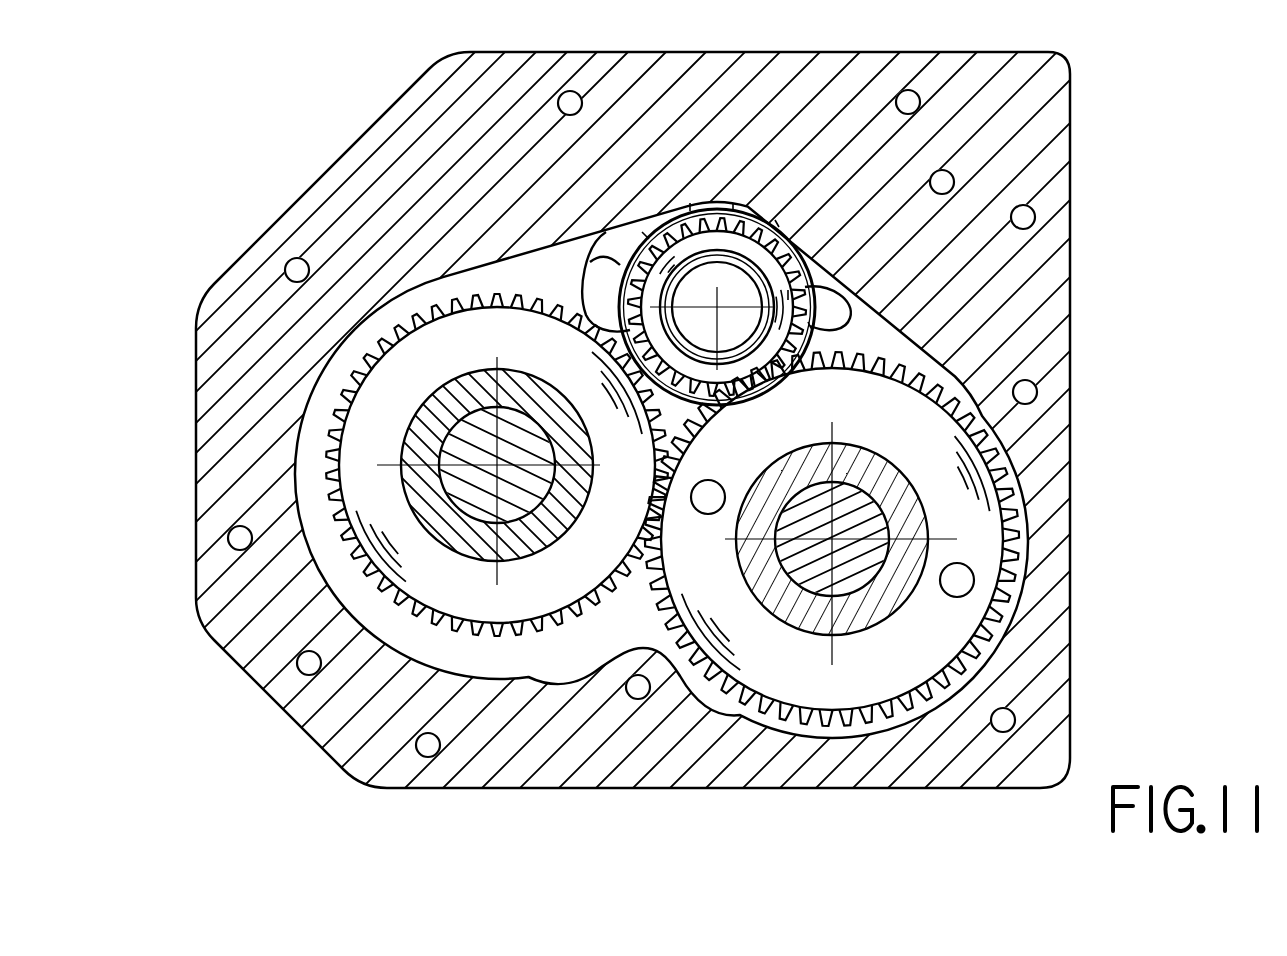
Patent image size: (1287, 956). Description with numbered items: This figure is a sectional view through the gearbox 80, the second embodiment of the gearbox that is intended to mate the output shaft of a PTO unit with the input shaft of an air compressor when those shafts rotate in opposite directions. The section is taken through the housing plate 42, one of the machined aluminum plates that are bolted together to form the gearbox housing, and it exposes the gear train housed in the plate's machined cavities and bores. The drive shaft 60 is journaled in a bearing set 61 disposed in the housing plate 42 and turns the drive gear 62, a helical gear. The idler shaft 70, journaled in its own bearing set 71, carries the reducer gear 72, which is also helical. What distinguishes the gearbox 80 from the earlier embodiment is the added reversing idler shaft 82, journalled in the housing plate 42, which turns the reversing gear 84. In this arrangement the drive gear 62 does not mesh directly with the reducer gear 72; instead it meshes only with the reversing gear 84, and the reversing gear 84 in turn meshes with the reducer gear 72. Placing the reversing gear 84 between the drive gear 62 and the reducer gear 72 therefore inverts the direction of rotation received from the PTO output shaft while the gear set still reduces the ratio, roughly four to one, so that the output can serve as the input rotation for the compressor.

The gearbox 80 is at (643, 420).
The housing plate 42 is at (1072, 300).
The drive shaft 60 is at (496, 478).
The bearing set 61 is at (588, 331).
The drive gear 62 is at (532, 590).
The idler shaft 70 is at (733, 327).
The bearing set 71 is at (578, 249).
The reducer gear 72 is at (840, 328).
The reversing idler shaft 82 is at (862, 492).
The reversing gear 84 is at (832, 539).